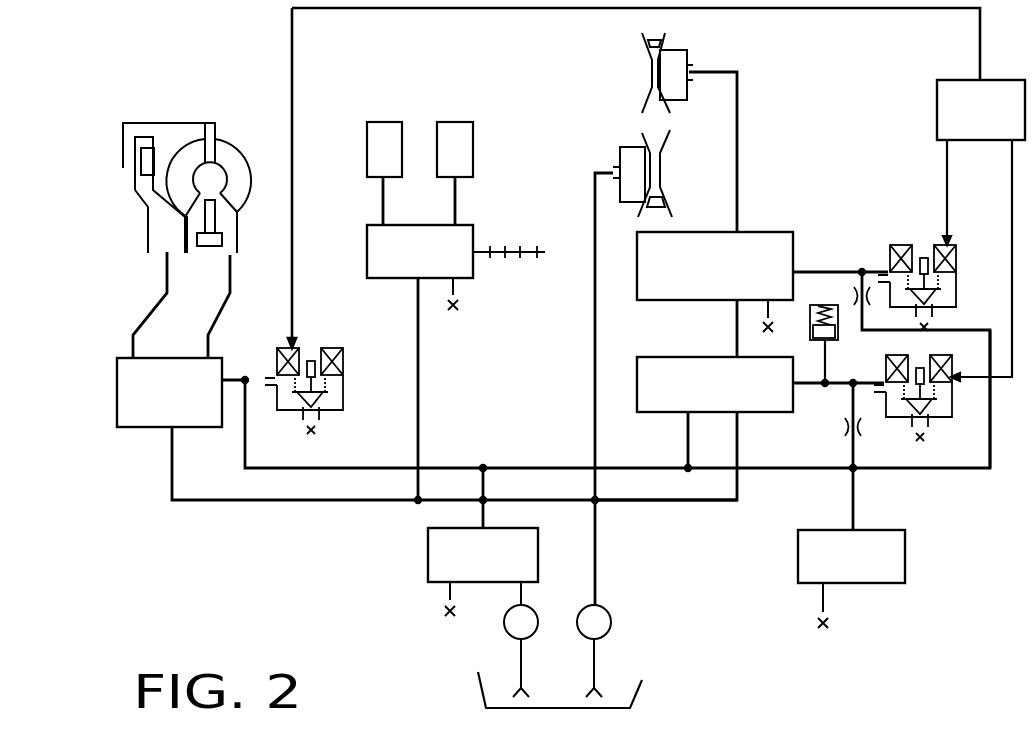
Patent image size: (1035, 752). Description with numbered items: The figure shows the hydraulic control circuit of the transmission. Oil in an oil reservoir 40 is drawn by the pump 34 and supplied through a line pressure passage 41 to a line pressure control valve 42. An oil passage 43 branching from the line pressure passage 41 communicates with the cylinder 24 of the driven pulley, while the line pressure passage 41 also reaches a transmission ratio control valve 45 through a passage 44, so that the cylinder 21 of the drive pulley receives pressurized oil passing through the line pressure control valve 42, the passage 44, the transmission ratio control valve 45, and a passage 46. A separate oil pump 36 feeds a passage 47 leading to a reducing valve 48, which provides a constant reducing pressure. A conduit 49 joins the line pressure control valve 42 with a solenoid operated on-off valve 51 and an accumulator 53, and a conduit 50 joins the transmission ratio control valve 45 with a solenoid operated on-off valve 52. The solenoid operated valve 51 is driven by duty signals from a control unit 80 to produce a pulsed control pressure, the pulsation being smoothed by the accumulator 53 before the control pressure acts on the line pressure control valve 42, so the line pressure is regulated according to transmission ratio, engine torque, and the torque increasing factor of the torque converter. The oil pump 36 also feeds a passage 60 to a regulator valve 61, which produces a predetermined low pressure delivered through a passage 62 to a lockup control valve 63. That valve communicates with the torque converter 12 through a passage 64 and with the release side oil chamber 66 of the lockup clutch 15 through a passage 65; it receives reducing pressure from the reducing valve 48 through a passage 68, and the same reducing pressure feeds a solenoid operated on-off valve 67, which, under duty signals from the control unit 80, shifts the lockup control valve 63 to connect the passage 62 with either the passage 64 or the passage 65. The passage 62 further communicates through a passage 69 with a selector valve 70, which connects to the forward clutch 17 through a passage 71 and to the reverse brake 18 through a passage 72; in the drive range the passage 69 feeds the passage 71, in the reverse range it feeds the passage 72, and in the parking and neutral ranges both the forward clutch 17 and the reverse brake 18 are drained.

The torque converter 12 is at (244, 165).
The lockup clutch 15 is at (150, 148).
The release side oil chamber 66 is at (138, 186).
The passage 65 is at (135, 326).
The passage 64 is at (225, 318).
The lockup control valve 63 is at (135, 428).
The passage 62 is at (272, 502).
The passage 68 is at (377, 466).
The solenoid operated on-off valve 67 is at (334, 346).
The forward clutch 17 is at (393, 122).
The reverse brake 18 is at (464, 122).
The passage 71 is at (381, 208).
The passage 72 is at (453, 210).
The selector valve 70 is at (367, 270).
The passage 69 is at (418, 382).
The regulator valve 61 is at (537, 528).
The passage 60 is at (522, 595).
The oil pump 36 is at (525, 640).
The pump 34 is at (609, 628).
The oil reservoir 40 is at (642, 694).
The oil passage 43 is at (595, 345).
The passage 47 is at (650, 466).
The line pressure passage 41 is at (670, 504).
The passage 46 is at (737, 157).
The cylinder 21 is at (680, 53).
The cylinder 24 is at (632, 160).
The transmission ratio control valve 45 is at (796, 221).
The passage 44 is at (737, 335).
The line pressure control valve 42 is at (660, 357).
The accumulator 53 is at (838, 328).
The solenoid operated on-off valve 52 is at (958, 257).
The solenoid operated on-off valve 51 is at (954, 363).
The conduit 50 is at (992, 416).
The conduit 49 is at (851, 452).
The reducing valve 48 is at (898, 530).
The control unit 80 is at (948, 80).